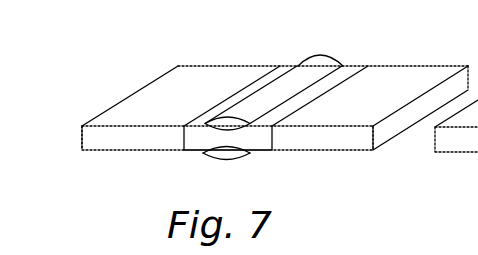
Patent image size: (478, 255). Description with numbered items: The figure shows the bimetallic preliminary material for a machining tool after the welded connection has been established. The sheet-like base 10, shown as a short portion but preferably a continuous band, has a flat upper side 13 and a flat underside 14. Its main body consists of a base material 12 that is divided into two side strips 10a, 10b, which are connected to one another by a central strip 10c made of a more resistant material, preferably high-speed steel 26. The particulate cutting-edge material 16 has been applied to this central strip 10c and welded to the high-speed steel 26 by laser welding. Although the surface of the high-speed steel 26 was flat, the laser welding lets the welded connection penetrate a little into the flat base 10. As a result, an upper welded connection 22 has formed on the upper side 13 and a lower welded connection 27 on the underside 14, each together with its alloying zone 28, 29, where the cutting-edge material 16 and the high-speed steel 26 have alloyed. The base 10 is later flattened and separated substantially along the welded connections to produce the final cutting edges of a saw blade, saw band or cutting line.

The sheet-like base 10 is at (400, 60).
The side strip 10a is at (92, 140).
The side strip 10b is at (356, 143).
The central strip 10c is at (195, 141).
The base material 12 is at (443, 95).
The upper side 13 is at (150, 100).
The underside 14 is at (135, 163).
The particulate cutting-edge material 16 is at (238, 122).
The upper welded connection 22 is at (309, 73).
The high-speed steel 26 is at (262, 139).
The lower welded connection 27 is at (235, 158).
The alloying zone 28 is at (220, 130).
The alloying zone 29 is at (213, 150).